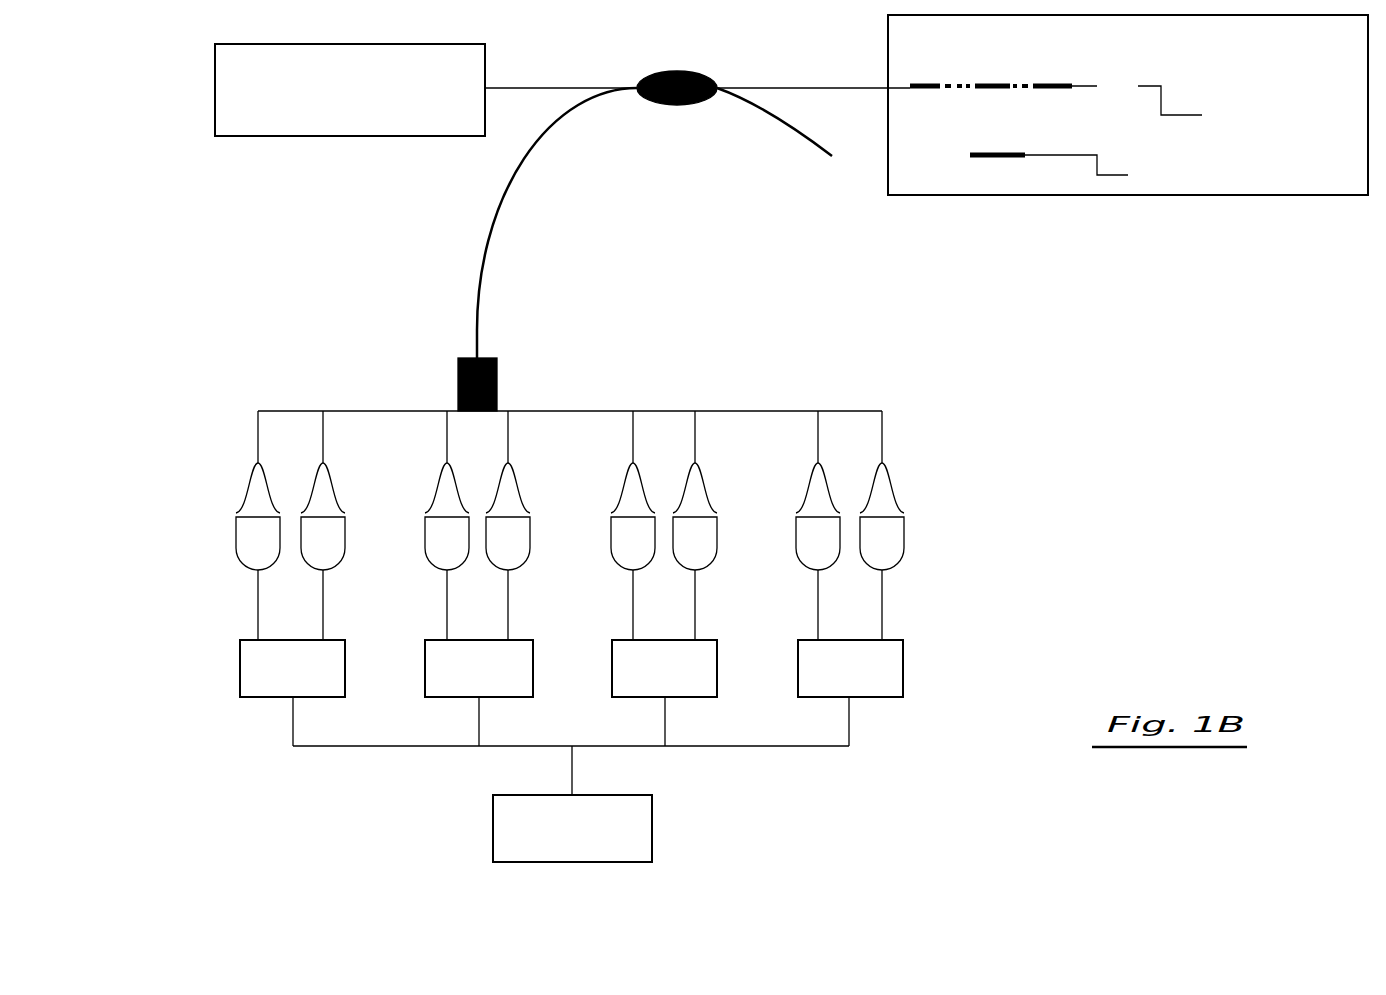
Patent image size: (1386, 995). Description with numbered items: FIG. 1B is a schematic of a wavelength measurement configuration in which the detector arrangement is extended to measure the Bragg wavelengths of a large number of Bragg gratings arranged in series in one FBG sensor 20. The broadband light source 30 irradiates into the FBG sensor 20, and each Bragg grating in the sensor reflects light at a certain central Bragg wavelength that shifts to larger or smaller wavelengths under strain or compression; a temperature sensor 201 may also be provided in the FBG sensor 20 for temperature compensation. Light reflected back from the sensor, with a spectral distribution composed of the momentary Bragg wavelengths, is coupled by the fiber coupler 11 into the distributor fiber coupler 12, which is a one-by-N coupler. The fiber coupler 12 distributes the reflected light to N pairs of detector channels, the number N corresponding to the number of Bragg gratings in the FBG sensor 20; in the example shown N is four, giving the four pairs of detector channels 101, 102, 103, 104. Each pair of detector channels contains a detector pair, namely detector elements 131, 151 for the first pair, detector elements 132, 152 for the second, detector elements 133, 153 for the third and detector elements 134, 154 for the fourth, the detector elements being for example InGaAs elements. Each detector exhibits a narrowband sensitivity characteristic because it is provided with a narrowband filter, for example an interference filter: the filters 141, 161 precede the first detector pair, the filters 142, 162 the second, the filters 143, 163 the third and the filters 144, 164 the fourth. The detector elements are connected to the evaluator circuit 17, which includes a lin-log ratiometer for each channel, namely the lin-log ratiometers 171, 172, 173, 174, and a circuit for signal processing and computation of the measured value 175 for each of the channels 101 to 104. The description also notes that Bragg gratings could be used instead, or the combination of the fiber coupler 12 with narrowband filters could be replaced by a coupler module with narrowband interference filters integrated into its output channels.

The broadband light source 30 is at (450, 103).
The fiber coupler 11 is at (681, 72).
The FBG sensor 20 is at (1230, 162).
The temperature sensor 201 is at (1000, 165).
The distributor fiber coupler 12 is at (570, 374).
The pair of detector channels 101 is at (313, 445).
The pair of detector channels 102 is at (498, 445).
The pair of detector channels 103 is at (684, 443).
The pair of detector channels 104 is at (872, 443).
The narrowband filter 161 is at (243, 462).
The narrowband filter 162 is at (432, 462).
The narrowband filter 163 is at (617, 462).
The narrowband filter 164 is at (804, 462).
The narrowband filter 141 is at (338, 462).
The narrowband filter 142 is at (521, 462).
The narrowband filter 143 is at (712, 462).
The narrowband filter 144 is at (898, 462).
The detector element 151 is at (246, 578).
The detector element 152 is at (433, 578).
The detector element 153 is at (619, 578).
The detector element 154 is at (805, 578).
The detector element 131 is at (333, 578).
The detector element 132 is at (520, 578).
The detector element 133 is at (705, 578).
The detector element 134 is at (891, 578).
The lin-log ratiometer 171 is at (298, 693).
The lin-log ratiometer 172 is at (484, 693).
The lin-log ratiometer 173 is at (670, 693).
The lin-log ratiometer 174 is at (856, 693).
The evaluator circuit 17 is at (600, 783).
The circuit for signal processing and computation of the measured value 175 is at (590, 845).